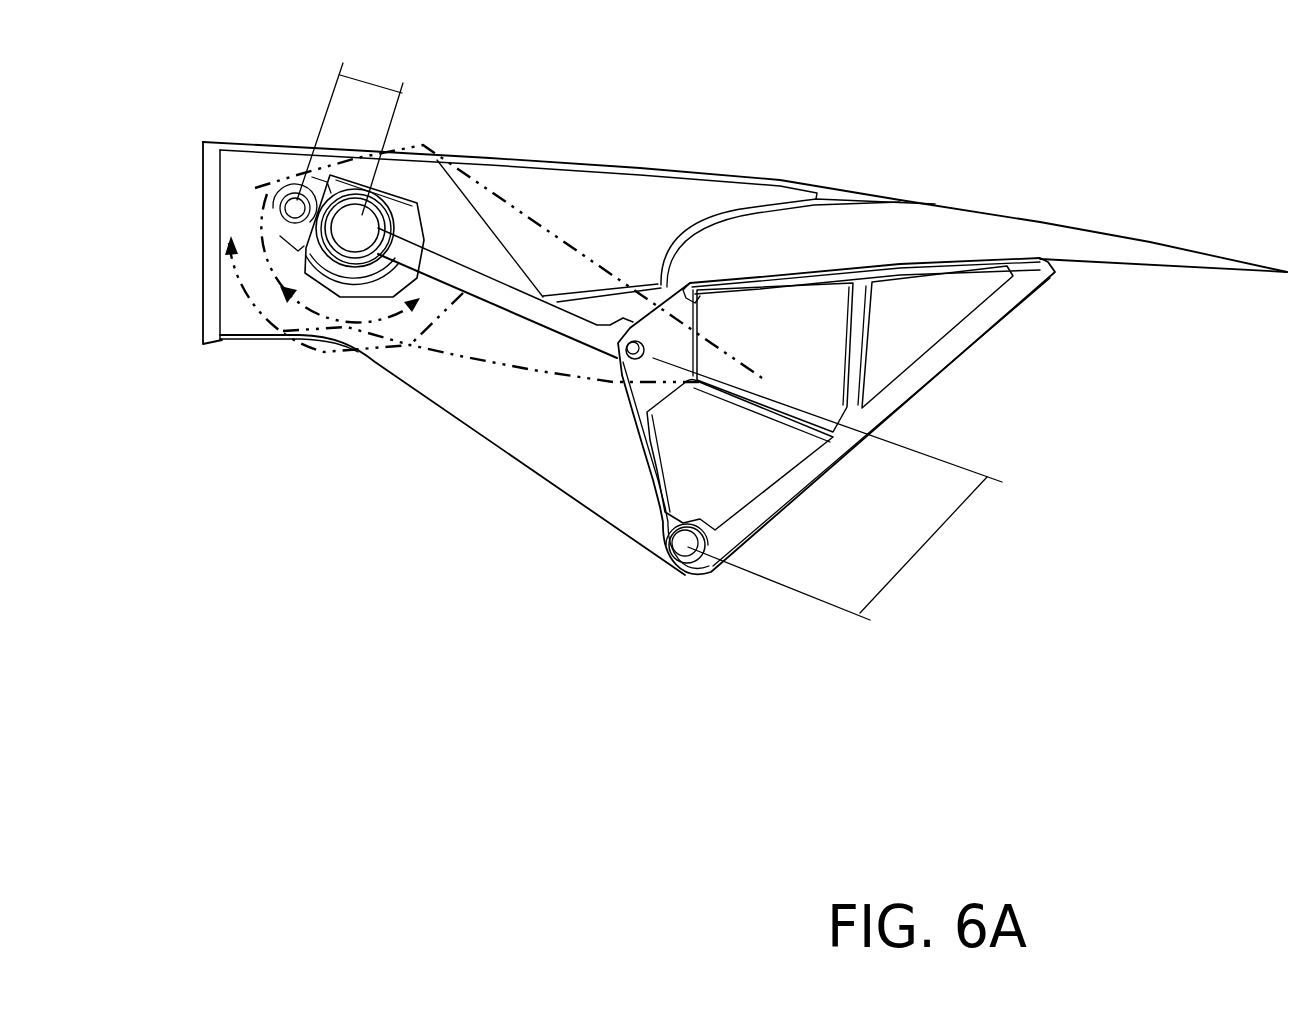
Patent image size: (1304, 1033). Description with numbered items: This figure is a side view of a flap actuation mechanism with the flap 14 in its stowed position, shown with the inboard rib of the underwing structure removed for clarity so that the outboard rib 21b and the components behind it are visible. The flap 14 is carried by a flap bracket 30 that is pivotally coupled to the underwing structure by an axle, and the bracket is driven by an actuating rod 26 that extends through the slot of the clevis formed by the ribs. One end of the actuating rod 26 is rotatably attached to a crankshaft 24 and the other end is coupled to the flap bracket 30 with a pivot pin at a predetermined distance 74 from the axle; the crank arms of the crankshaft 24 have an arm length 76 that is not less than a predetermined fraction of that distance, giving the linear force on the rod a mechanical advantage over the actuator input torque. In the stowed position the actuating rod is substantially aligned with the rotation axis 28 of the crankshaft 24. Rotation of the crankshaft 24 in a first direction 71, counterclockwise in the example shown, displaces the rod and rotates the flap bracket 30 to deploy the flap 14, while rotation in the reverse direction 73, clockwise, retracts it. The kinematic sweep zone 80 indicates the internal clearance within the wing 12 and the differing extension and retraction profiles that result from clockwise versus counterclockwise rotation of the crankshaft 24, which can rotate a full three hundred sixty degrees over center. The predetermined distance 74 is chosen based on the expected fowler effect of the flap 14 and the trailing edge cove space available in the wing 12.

The wing 12 is at (570, 153).
The flap 14 is at (967, 200).
The kinematic sweep zone 80 is at (565, 245).
The rotation axis 28 is at (358, 226).
The crankshaft 24 is at (347, 257).
The arm length 76 is at (368, 82).
The actuating rod 26 is at (530, 307).
The outboard rib 21b is at (580, 443).
The flap bracket 30 is at (663, 367).
The predetermined distance 74 is at (917, 550).
The first direction 71 is at (285, 300).
The reverse direction 73 is at (313, 352).